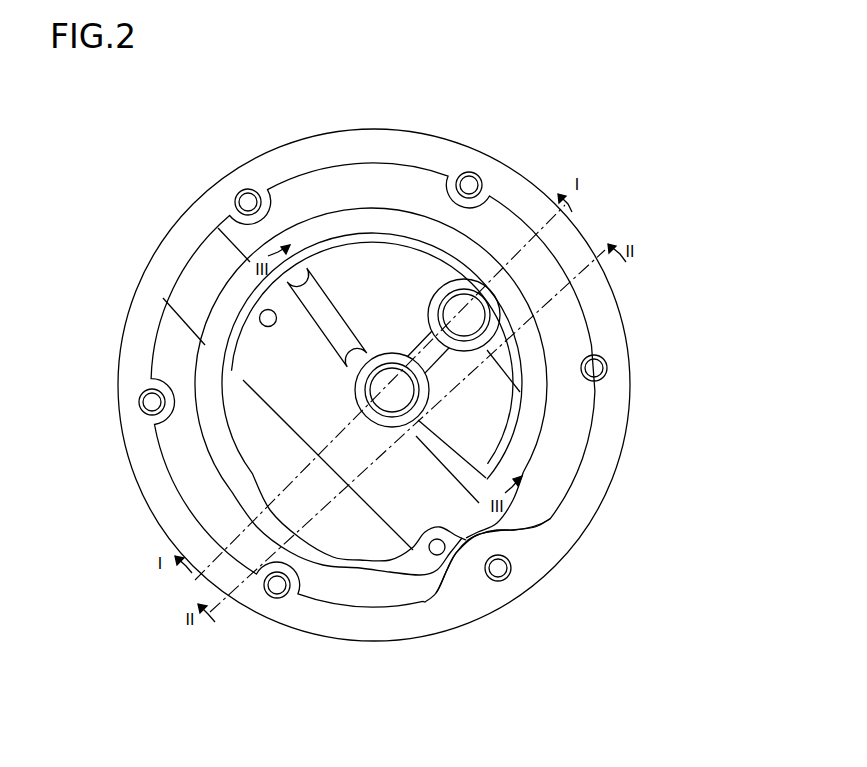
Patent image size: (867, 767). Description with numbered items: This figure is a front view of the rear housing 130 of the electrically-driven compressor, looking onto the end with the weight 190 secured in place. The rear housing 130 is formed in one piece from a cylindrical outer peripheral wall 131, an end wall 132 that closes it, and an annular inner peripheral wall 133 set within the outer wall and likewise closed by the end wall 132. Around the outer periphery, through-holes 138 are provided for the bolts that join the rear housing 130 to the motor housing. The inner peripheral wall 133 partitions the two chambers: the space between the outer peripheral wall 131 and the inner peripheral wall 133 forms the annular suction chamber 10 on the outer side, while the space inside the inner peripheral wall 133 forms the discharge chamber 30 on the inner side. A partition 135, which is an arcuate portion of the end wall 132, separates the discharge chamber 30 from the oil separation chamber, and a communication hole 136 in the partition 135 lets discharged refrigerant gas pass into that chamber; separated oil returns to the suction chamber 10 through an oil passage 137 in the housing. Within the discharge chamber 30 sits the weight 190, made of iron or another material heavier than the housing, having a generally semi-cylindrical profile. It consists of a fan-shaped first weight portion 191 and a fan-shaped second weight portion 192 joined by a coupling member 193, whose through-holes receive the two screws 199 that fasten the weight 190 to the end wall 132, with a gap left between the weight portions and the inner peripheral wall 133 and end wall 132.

The suction chamber 10 is at (509, 240).
The discharge chamber 30 is at (333, 507).
The rear housing 130 is at (543, 128).
The outer peripheral wall 131 is at (590, 238).
The end wall 132 is at (225, 509).
The inner peripheral wall 133 is at (537, 462).
The partition 135 is at (318, 430).
The communication hole 136 is at (262, 311).
The oil passage 137 is at (433, 558).
The through-holes 138 is at (246, 188).
The weight 190 is at (517, 433).
The first weight portion 191 is at (394, 265).
The second weight portion 192 is at (503, 407).
The coupling member 193 is at (455, 362).
The screws 199 is at (380, 354).